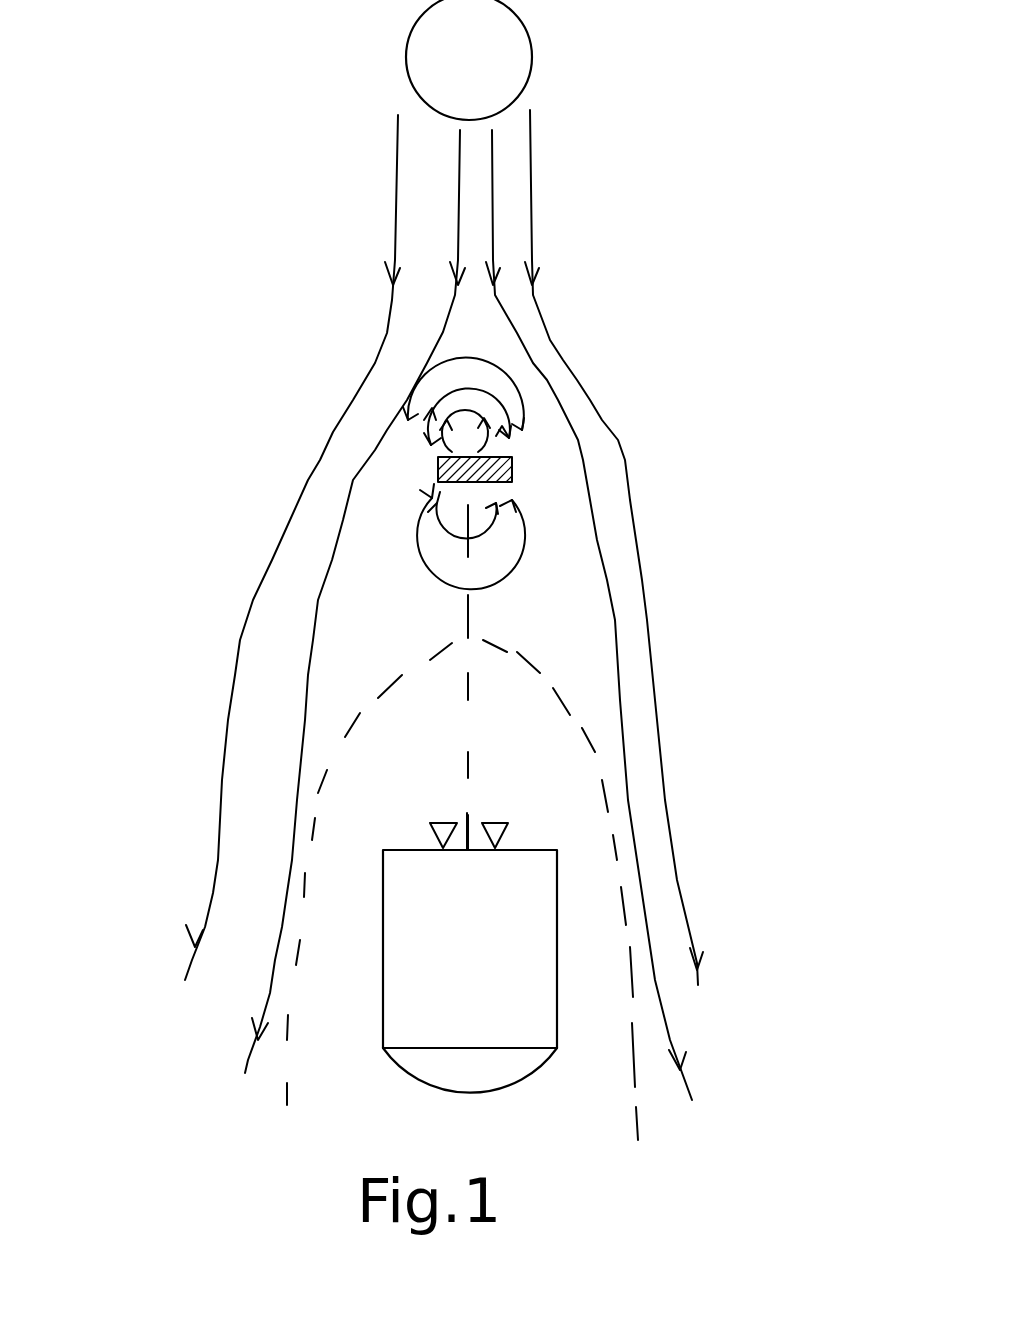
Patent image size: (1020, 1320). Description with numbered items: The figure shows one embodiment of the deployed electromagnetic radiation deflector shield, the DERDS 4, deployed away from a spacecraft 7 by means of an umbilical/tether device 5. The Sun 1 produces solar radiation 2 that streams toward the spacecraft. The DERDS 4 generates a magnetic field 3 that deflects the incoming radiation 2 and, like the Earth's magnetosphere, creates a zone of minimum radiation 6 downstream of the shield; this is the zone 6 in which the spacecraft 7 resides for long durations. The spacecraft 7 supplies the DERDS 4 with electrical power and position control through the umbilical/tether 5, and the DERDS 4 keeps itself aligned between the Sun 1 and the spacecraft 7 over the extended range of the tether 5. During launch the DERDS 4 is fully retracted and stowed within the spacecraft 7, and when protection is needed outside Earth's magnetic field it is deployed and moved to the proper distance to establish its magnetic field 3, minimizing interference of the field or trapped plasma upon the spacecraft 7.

The Sun 1 is at (534, 74).
The solar radiation 2 is at (534, 235).
The magnetic field 3 is at (423, 457).
The deployed electromagnetic radiation deflector shield (DERDS) 4 is at (513, 472).
The umbilical/tether device 5 is at (468, 690).
The zone of minimum radiation 6 is at (612, 857).
The spacecraft 7 is at (380, 967).